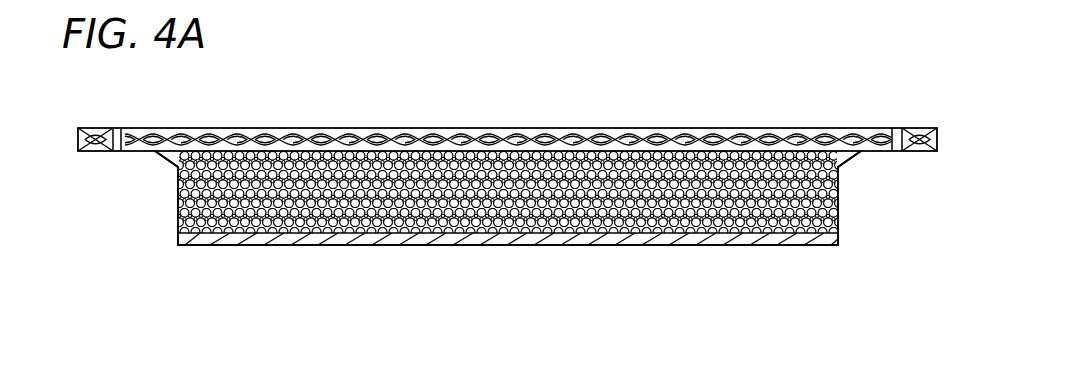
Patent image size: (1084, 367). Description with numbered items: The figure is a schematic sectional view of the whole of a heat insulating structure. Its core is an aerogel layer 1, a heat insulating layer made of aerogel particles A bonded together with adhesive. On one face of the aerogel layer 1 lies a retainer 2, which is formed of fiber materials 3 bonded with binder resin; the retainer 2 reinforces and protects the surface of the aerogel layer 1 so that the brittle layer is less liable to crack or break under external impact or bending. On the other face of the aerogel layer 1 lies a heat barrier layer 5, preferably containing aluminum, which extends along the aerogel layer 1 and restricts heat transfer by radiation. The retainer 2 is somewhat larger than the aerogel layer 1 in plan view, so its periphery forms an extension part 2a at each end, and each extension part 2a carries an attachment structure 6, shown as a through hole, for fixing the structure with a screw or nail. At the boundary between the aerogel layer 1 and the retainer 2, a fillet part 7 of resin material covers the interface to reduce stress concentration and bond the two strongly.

The aerogel layer 1 is at (550, 197).
The retainer 2 is at (592, 130).
The extension part 2a is at (99, 152).
The fiber materials 3 is at (458, 130).
The heat barrier layer 5 is at (625, 243).
The attachment structure 6 is at (118, 143).
The fillet part 7 is at (172, 160).
The aerogel particles A is at (373, 153).